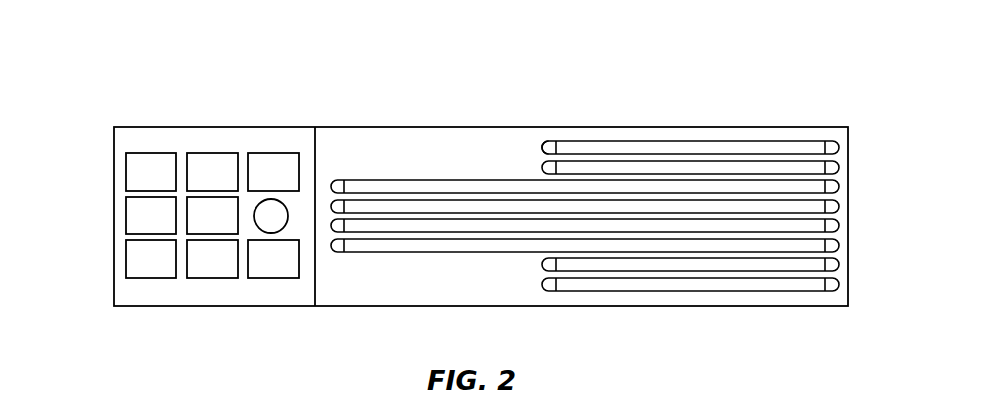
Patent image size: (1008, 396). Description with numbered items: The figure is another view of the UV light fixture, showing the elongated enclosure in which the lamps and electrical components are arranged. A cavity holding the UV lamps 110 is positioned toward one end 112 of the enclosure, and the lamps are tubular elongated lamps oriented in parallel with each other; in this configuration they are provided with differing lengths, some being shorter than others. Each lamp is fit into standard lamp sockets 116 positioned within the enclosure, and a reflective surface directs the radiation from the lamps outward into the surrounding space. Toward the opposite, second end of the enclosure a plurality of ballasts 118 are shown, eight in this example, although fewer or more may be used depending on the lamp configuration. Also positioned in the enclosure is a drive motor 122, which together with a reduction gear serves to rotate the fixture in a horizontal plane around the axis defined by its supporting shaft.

The UV lamps 110 is at (640, 150).
The end of enclosure 112 is at (114, 206).
The lamp sockets 116 is at (548, 150).
The ballasts 118 is at (212, 171).
The drive motor 122 is at (270, 216).